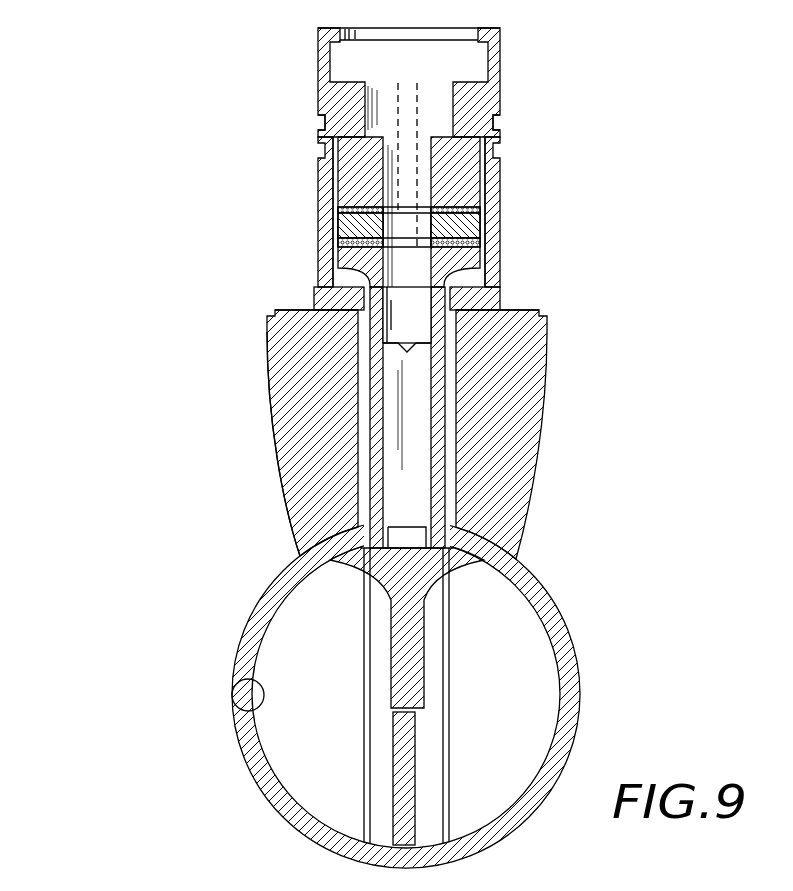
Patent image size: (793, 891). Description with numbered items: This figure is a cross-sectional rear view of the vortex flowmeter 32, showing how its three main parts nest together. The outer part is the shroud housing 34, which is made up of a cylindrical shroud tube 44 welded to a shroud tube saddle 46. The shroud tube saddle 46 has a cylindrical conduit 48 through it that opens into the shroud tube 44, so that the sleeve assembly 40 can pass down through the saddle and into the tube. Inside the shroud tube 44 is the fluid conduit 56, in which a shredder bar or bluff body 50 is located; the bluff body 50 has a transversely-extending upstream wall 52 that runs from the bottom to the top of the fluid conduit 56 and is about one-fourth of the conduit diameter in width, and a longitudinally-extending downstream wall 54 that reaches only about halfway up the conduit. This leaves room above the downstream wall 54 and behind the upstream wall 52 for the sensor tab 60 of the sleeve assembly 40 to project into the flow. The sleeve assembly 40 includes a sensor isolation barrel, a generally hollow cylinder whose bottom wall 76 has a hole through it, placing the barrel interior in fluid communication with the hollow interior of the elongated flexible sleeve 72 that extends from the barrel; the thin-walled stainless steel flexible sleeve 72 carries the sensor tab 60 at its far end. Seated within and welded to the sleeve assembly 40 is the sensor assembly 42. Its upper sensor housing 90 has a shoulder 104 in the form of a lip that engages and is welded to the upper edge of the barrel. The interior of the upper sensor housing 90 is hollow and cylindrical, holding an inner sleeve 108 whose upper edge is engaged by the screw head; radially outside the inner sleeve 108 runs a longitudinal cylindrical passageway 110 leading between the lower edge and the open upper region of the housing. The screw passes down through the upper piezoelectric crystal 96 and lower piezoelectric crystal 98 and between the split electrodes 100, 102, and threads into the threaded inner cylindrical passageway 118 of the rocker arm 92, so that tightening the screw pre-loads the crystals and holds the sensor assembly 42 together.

The flowmeter 32 is at (170, 378).
The shroud housing 34 is at (235, 618).
The sleeve assembly 40 is at (298, 248).
The sensor assembly 42 is at (508, 100).
The shroud tube 44 is at (240, 760).
The shroud tube saddle 46 is at (300, 512).
The cylindrical conduit 48 is at (456, 420).
The bluff body 50 is at (455, 710).
The upstream wall 52 is at (430, 792).
The downstream wall 54 is at (400, 775).
The fluid conduit 56 is at (252, 690).
The sensor tab 60 is at (420, 665).
The flexible sleeve 72 is at (374, 470).
The bottom wall 76 is at (492, 297).
The upper sensor housing 90 is at (318, 95).
The rocker arm 92 is at (412, 500).
The upper piezoelectric crystal 96 is at (480, 210).
The lower piezoelectric crystal 98 is at (480, 240).
The split electrode 100 is at (315, 230).
The split electrode 102 is at (480, 222).
The shoulder 104 is at (318, 132).
The inner sleeve 108 is at (433, 173).
The cylindrical passageway 110 is at (315, 175).
The threaded inner cylindrical passageway 118 is at (447, 328).